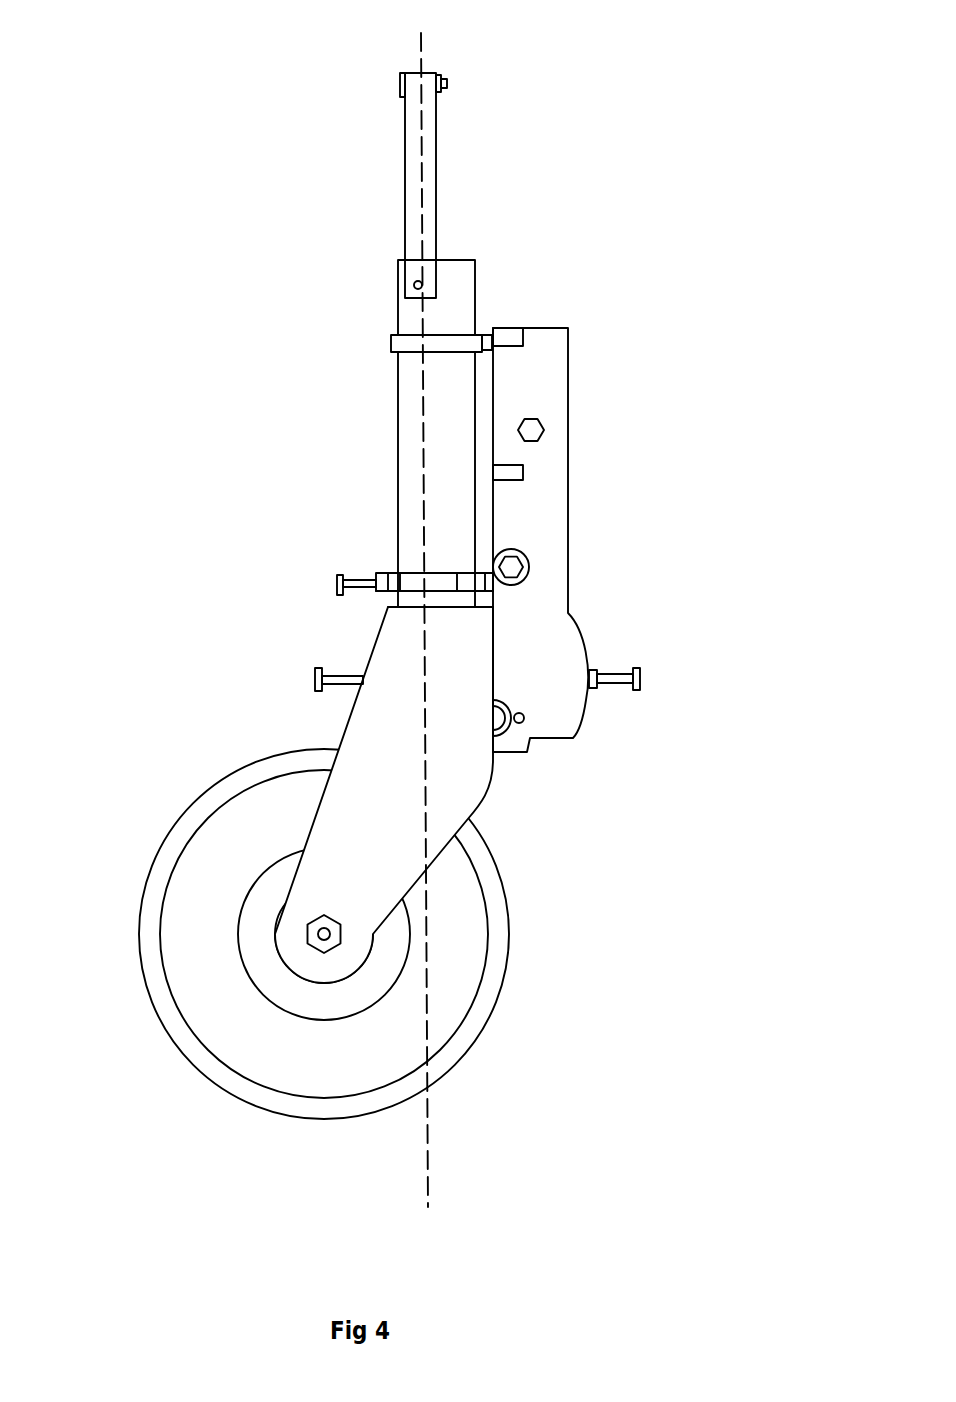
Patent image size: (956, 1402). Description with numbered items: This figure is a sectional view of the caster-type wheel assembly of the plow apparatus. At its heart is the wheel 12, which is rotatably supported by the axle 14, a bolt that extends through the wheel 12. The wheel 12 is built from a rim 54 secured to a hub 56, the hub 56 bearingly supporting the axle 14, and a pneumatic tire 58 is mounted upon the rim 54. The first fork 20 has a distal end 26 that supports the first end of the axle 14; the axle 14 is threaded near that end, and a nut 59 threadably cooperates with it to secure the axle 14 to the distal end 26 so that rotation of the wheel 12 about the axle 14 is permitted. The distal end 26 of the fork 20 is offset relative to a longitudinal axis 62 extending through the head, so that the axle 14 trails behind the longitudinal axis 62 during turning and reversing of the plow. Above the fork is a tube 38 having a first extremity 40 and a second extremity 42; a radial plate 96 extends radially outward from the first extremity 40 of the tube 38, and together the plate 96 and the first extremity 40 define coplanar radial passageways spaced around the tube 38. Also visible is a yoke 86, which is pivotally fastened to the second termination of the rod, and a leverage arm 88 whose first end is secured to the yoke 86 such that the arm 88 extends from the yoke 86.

The wheel 12 is at (351, 962).
The axle 14 is at (342, 932).
The first fork 20 is at (342, 808).
The distal end of the first fork 26 is at (310, 968).
The tube 38 is at (452, 427).
The first extremity of the tube 40 is at (458, 550).
The second extremity of the tube 42 is at (462, 297).
The rim 54 is at (465, 968).
The hub 56 is at (268, 977).
The pneumatic tire 58 is at (478, 1038).
The nut 59 is at (307, 932).
The longitudinal axis 62 is at (428, 1135).
The yoke 86 is at (438, 73).
The leverage arm 88 is at (430, 163).
The radial plate 96 is at (398, 583).